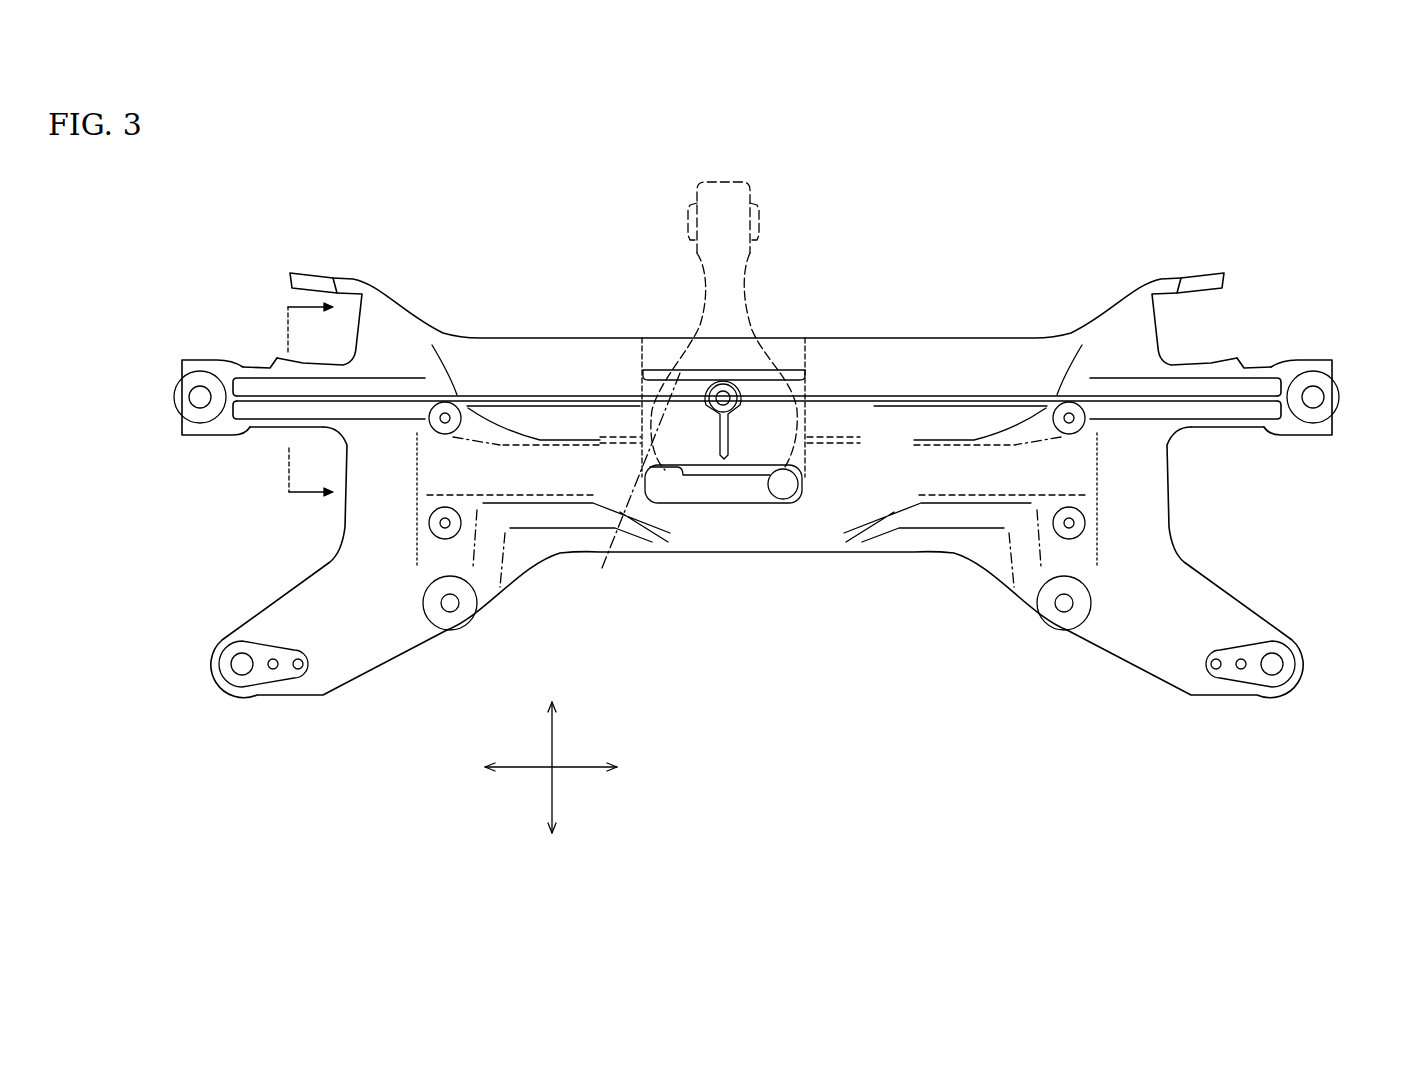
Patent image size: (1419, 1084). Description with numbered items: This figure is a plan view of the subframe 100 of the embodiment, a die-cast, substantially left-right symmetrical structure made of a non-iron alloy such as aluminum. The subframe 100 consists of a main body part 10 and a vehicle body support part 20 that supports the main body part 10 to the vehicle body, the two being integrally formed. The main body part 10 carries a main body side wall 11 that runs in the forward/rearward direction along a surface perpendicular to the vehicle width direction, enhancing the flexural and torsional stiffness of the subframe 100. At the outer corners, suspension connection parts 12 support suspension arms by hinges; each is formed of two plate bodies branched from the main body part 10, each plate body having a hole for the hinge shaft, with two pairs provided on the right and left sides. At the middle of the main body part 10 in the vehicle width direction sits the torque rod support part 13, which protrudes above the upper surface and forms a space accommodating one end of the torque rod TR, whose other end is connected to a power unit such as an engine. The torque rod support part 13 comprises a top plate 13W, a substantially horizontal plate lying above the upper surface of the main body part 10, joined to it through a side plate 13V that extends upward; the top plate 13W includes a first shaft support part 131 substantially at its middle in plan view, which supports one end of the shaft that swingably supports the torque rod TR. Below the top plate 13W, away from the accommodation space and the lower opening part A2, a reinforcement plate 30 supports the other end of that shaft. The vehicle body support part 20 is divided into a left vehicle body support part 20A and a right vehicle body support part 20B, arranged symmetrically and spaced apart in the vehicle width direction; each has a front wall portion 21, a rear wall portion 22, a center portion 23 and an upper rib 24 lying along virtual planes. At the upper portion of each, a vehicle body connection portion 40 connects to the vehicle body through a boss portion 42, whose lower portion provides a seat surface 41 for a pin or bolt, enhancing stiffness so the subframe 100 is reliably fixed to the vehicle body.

The subframe 100 is at (492, 222).
The main body part 10 is at (737, 557).
The main body side wall 11 is at (345, 527).
The suspension connection part 12 is at (303, 272).
The torque rod support part 13 is at (778, 321).
The first shaft support part 131 is at (803, 383).
The side plate 13V is at (740, 394).
The top plate 13W is at (707, 440).
The vehicle body support part 20 is at (756, 374).
The left vehicle body support part 20A is at (247, 367).
The right vehicle body support part 20B is at (1272, 362).
The front wall portion 21 is at (270, 365).
The rear wall portion 22 is at (250, 427).
The center portion 23 is at (313, 386).
The upper rib 24 is at (327, 398).
The reinforcement plate 30 is at (757, 490).
The vehicle body connection portion 40 is at (200, 437).
The seat surface 41 is at (175, 395).
The boss portion 42 is at (182, 418).
The torque rod TR is at (700, 277).
The lower opening part A2 is at (636, 485).